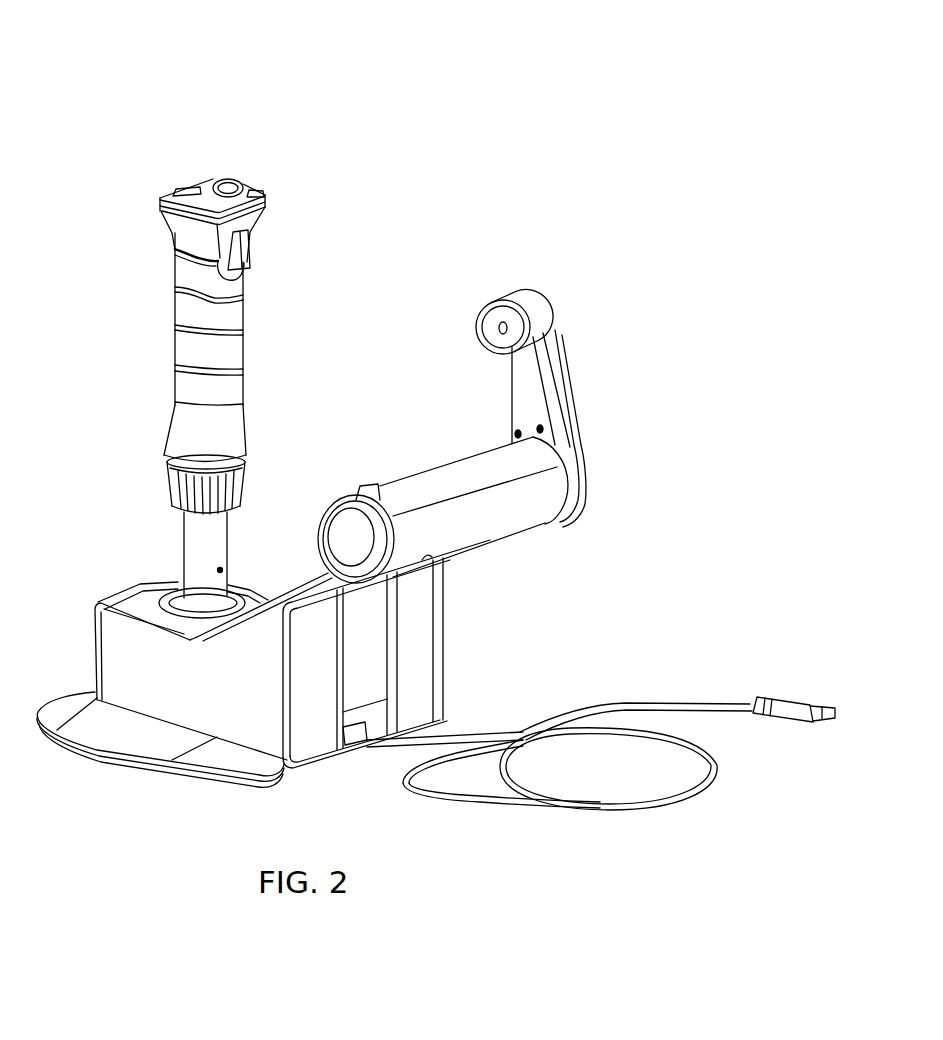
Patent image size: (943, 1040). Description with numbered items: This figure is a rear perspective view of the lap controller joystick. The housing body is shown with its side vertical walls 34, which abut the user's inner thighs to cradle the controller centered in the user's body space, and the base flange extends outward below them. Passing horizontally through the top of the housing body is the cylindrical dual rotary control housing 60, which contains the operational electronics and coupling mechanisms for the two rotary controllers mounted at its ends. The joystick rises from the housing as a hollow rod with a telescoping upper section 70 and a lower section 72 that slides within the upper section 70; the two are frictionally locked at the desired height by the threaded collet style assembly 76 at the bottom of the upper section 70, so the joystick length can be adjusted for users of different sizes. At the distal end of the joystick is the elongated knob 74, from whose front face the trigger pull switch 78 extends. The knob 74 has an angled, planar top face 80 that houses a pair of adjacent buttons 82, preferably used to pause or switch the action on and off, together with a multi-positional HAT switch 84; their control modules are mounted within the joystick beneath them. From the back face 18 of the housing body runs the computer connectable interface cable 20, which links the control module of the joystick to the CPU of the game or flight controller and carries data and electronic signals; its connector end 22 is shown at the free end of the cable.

The back face 18 is at (437, 643).
The interface cable 20 is at (620, 810).
The connector 22 is at (782, 697).
The side vertical walls 34 is at (148, 675).
The dual rotary control housing 60 is at (530, 510).
The upper section 70 is at (182, 353).
The lower section 72 is at (187, 542).
The elongated knob 74 is at (183, 228).
The threaded collet style assembly 76 is at (245, 487).
The trigger pull switch 78 is at (252, 246).
The angled planar top face 80 is at (253, 181).
The buttons 82 is at (193, 182).
The HAT switch 84 is at (237, 178).